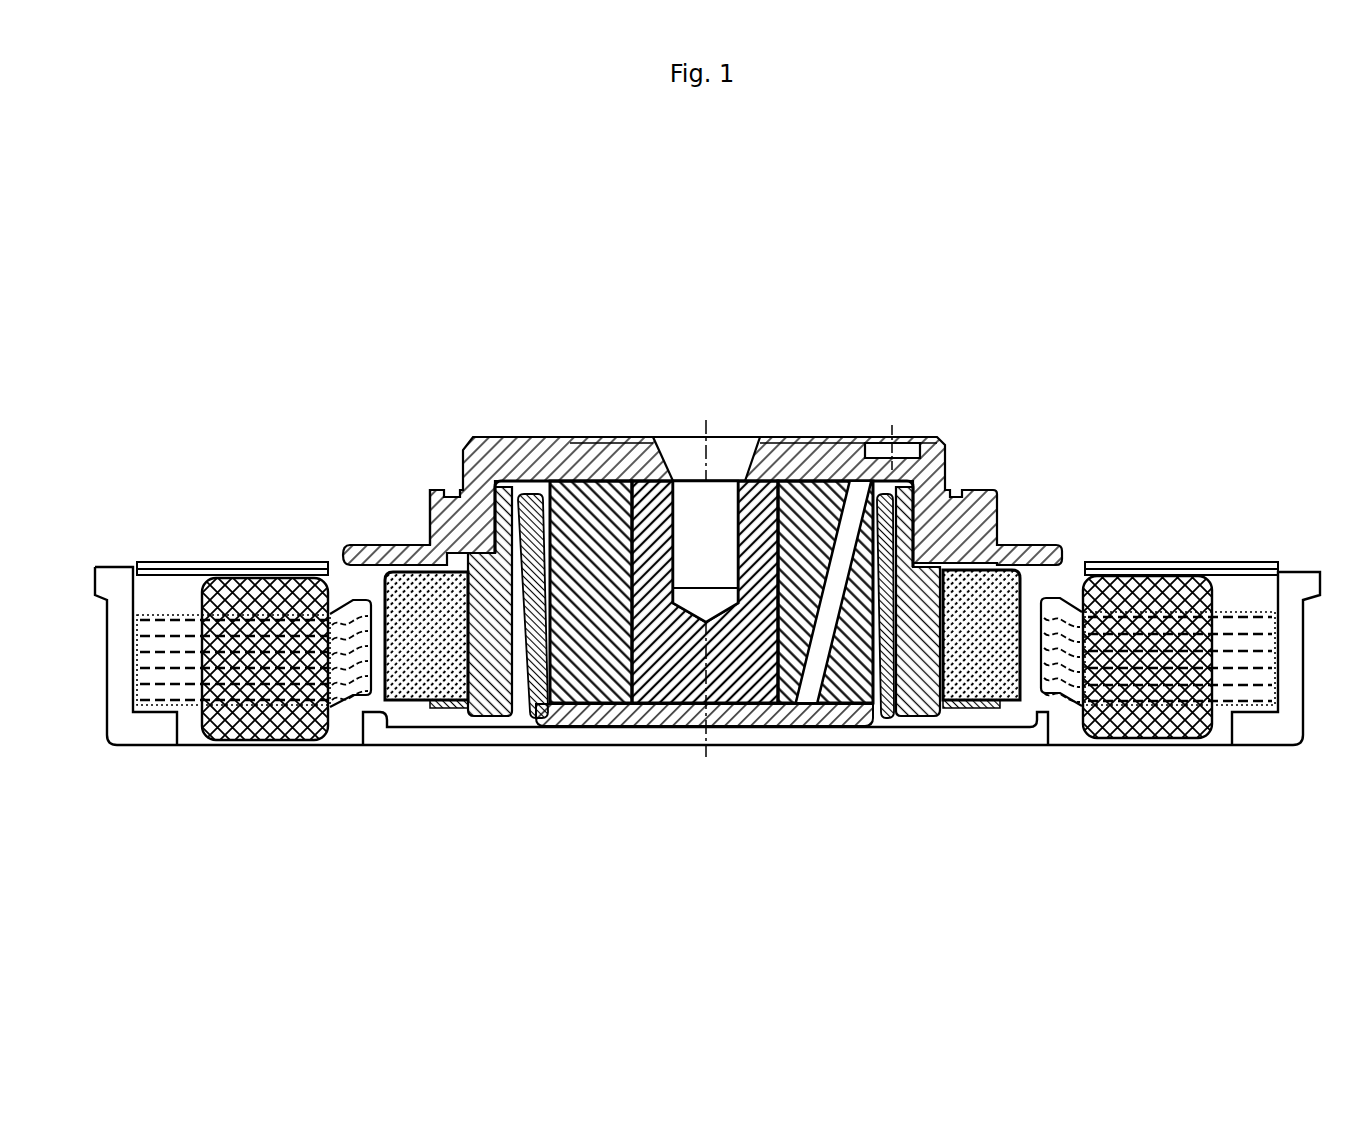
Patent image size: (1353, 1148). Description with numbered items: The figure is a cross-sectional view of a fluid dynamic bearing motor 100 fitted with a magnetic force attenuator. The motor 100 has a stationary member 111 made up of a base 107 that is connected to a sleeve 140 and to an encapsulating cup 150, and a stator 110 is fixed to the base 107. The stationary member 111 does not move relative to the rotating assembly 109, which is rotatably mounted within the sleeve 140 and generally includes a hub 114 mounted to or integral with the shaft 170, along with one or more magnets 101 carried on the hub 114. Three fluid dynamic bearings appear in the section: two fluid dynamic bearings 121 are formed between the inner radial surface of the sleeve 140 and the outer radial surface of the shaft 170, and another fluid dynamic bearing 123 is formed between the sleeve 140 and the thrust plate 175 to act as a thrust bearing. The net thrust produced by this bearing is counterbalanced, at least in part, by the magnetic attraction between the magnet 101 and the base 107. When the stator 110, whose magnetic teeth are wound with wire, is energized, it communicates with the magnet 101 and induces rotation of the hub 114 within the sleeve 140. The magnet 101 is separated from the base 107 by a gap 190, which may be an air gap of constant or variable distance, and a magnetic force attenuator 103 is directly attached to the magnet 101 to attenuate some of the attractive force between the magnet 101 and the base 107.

The motor 100 is at (927, 269).
The magnet 101 is at (1001, 605).
The magnetic force attenuator 103 is at (996, 700).
The base 107 is at (1031, 730).
The rotating assembly 109 is at (801, 394).
The stator 110 is at (1068, 640).
The stationary member 111 is at (428, 746).
The hub 114 is at (430, 492).
The fluid dynamic bearings 121 is at (540, 475).
The fluid dynamic bearing 123 is at (620, 476).
The sleeve 140 is at (558, 712).
The cup 150 is at (692, 708).
The shaft 170 is at (733, 660).
The thrust plate 175 is at (600, 465).
The gap 190 is at (970, 715).